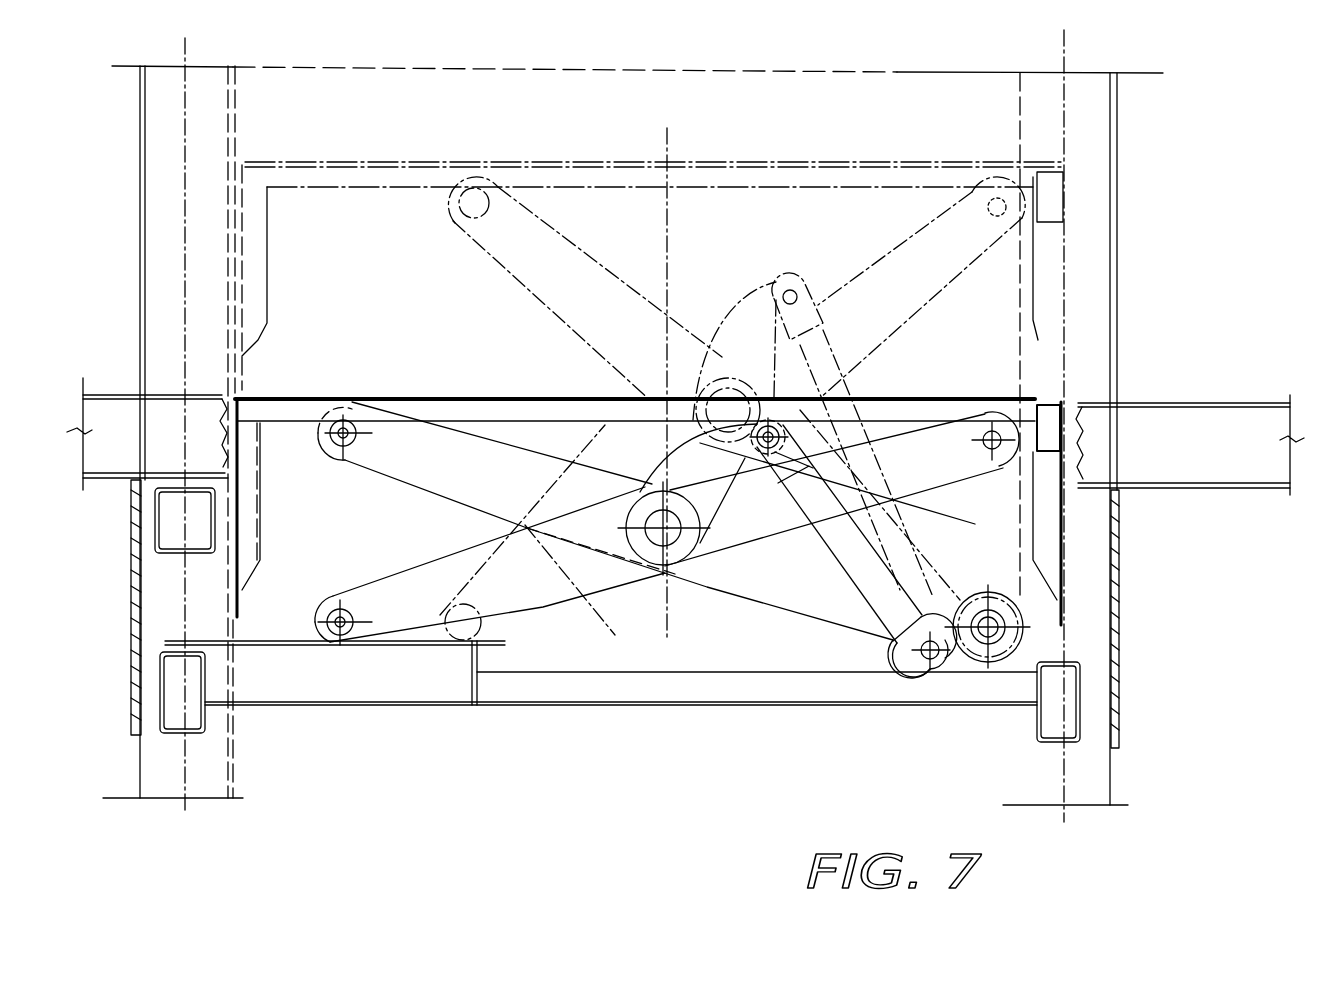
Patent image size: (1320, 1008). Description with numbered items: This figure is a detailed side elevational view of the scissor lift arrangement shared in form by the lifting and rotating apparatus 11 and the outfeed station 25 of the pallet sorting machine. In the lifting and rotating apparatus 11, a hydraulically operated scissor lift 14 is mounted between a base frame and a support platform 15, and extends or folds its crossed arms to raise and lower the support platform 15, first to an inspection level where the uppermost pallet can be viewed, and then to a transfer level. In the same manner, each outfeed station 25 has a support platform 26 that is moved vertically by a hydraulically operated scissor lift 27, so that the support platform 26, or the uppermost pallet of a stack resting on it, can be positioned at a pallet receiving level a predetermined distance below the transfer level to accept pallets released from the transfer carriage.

The support platform 15 is at (648, 474).
The support platform 26 is at (508, 405).
The scissor lift 14 is at (667, 534).
The scissor lift 27 is at (596, 578).
The lifting and rotating apparatus 11 is at (617, 694).
The outfeed station 25 is at (448, 748).